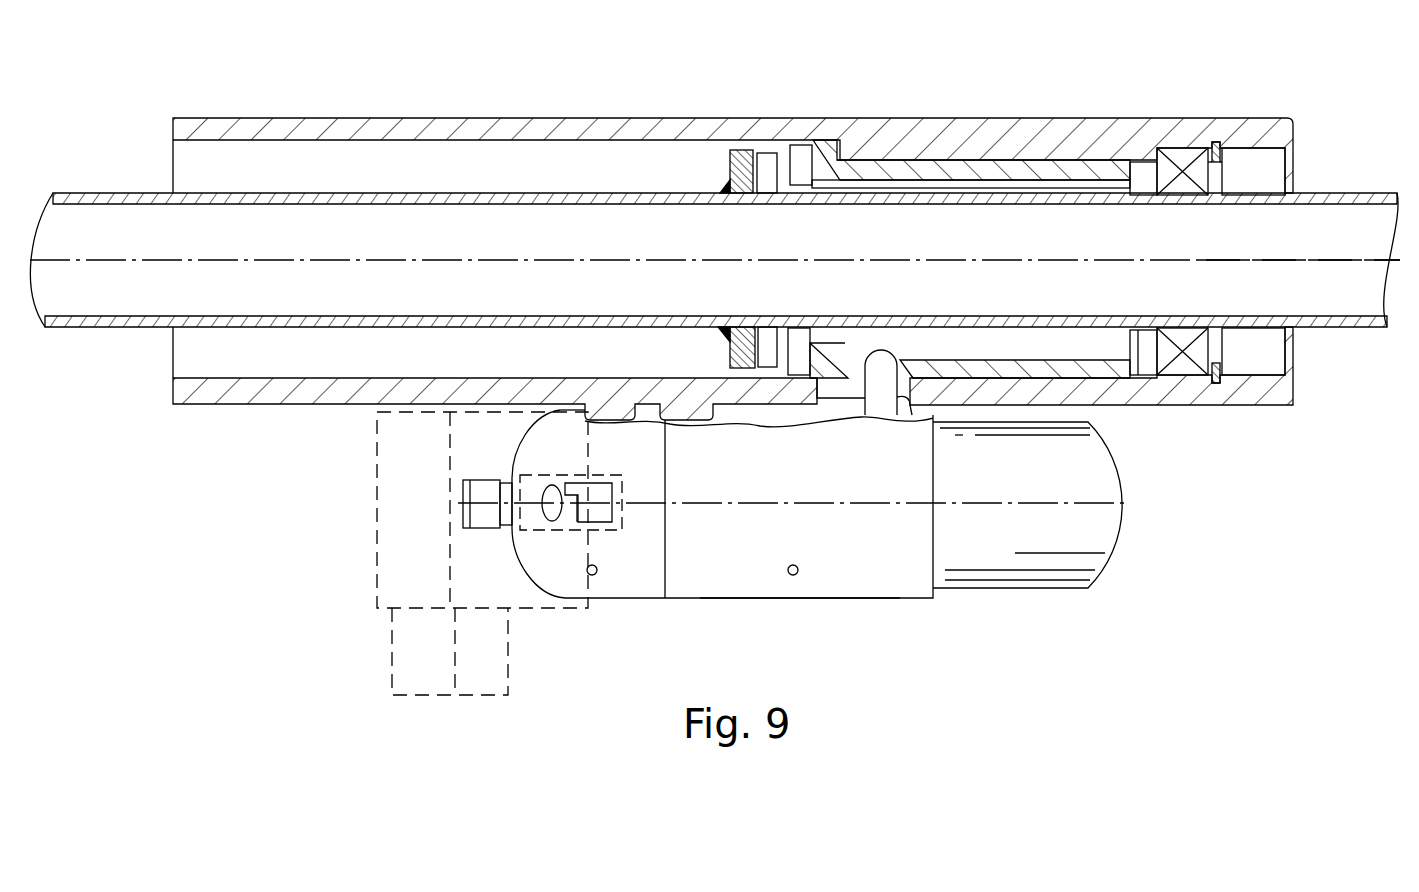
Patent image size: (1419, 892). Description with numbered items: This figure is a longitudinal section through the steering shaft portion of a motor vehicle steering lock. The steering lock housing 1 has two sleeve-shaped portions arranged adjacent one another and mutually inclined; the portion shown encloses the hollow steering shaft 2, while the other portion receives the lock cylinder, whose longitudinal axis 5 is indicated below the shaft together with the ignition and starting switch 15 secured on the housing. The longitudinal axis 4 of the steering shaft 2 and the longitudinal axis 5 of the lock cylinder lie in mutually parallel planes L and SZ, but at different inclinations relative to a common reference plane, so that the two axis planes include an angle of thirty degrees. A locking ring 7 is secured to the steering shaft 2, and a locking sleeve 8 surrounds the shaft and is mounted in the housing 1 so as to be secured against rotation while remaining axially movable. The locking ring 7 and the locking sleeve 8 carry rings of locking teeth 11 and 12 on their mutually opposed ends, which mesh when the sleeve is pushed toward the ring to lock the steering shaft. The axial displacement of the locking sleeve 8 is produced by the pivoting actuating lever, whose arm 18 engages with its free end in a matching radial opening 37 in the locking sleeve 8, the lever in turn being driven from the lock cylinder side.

The steering lock housing 1 is at (560, 128).
The steering shaft 2 is at (100, 215).
The longitudinal axis of the steering shaft 4 is at (245, 258).
The longitudinal axis of the lock cylinder 5 is at (707, 512).
The locking ring 7 is at (738, 160).
The locking sleeve 8 is at (1018, 168).
The locking teeth 11 is at (766, 170).
The locking teeth 12 is at (800, 165).
The ignition and starting switch 15 is at (400, 497).
The arm of the actuating lever 18 is at (882, 360).
The radial opening 37 is at (862, 362).
The plane L is at (1337, 263).
The plane SZ is at (1102, 503).